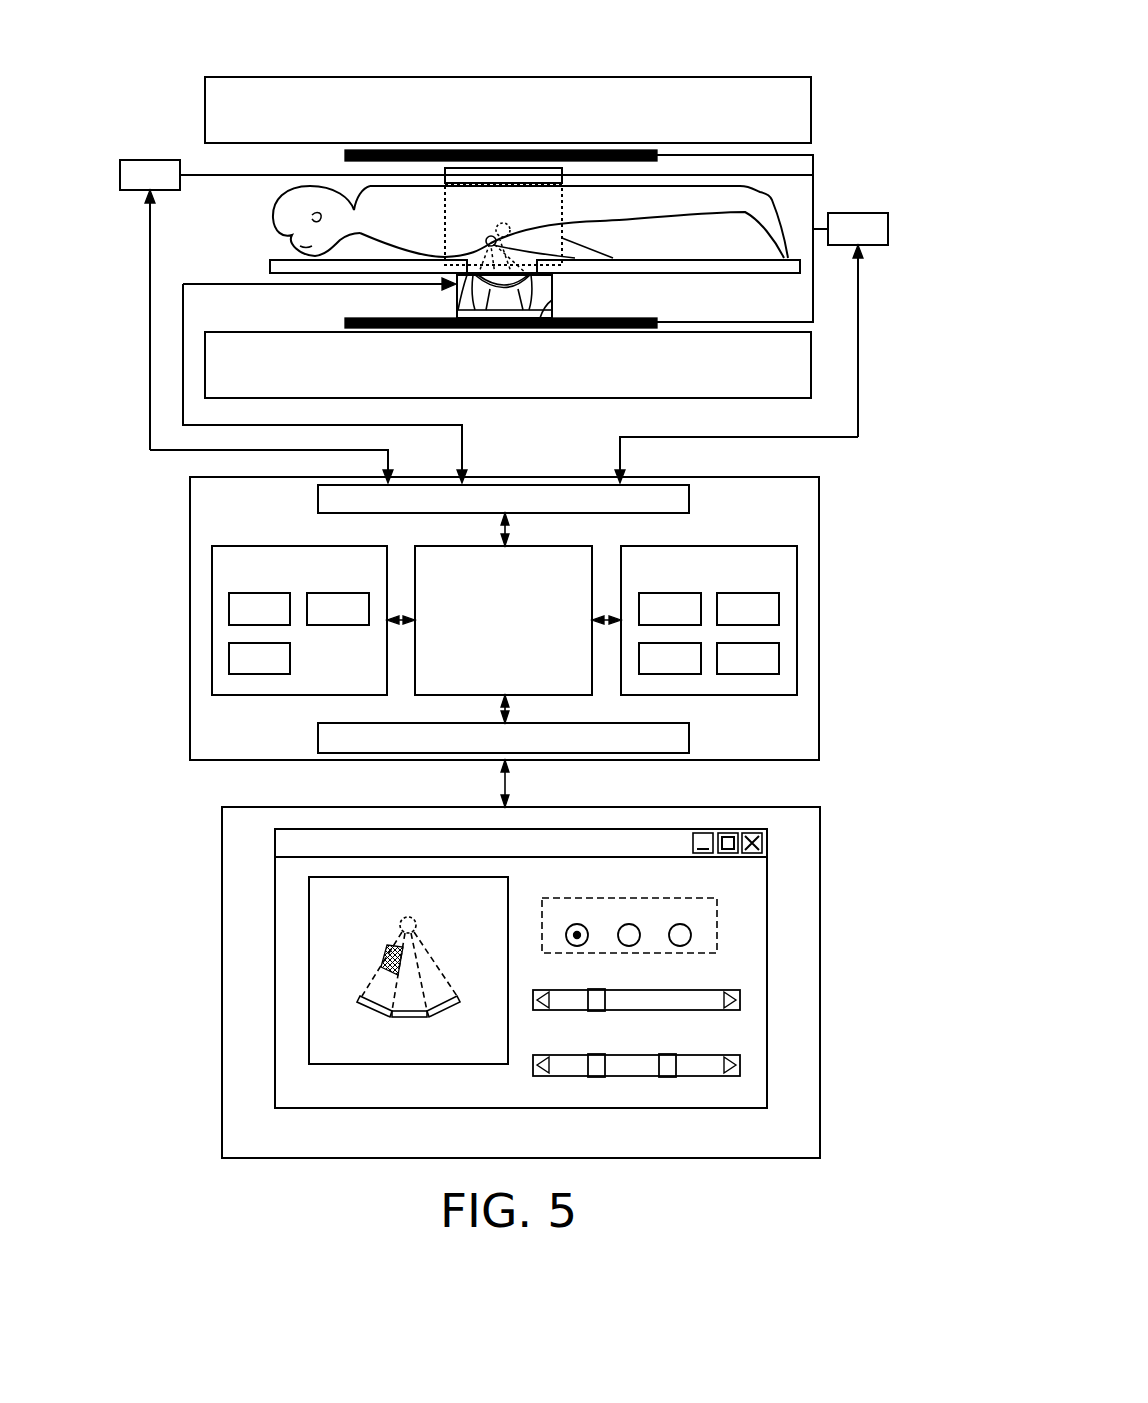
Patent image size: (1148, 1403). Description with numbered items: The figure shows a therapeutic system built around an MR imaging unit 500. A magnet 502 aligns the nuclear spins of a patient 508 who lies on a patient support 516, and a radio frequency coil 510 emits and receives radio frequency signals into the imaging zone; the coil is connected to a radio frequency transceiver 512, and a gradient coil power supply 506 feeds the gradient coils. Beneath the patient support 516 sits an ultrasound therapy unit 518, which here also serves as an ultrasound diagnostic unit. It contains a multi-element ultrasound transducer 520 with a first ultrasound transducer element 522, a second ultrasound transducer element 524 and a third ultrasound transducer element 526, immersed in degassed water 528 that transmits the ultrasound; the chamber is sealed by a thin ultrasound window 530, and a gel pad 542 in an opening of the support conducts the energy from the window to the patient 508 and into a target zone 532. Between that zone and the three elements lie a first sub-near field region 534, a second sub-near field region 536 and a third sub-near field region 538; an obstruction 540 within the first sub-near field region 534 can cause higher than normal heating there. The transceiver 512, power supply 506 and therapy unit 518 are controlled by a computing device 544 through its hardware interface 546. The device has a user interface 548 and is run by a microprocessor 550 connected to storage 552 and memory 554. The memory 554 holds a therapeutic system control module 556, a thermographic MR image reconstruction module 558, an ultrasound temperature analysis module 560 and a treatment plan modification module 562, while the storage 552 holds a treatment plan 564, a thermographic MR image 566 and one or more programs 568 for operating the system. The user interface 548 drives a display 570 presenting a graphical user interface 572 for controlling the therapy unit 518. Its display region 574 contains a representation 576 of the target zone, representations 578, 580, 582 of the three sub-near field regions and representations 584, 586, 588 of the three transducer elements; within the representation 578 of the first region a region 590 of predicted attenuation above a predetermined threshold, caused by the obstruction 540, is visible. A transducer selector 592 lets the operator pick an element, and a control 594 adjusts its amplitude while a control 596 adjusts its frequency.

The MR imaging unit 500 is at (824, 73).
The magnet 502 is at (205, 106).
The gradient coil power supply 506 is at (345, 157).
The patient 508 is at (275, 215).
The radio frequency coil 510 is at (562, 175).
The radio frequency transceiver 512 is at (466, 321).
The patient support 516 is at (270, 266).
The ultrasound therapy unit 518 is at (578, 293).
The multi-element ultrasound transducer 520 is at (548, 325).
The first ultrasound transducer element 522 is at (468, 323).
The second ultrasound transducer element 524 is at (502, 330).
The third ultrasound transducer element 526 is at (538, 323).
The degassed water 528 is at (457, 300).
The ultrasound window 530 is at (447, 333).
The target zone 532 is at (486, 236).
The first sub-near field region 534 is at (562, 238).
The second sub-near field region 536 is at (548, 228).
The third sub-near field region 538 is at (507, 236).
The obstruction 540 is at (485, 240).
The gel pad 542 is at (648, 259).
The computing device 544 is at (819, 527).
The hardware interface 546 is at (689, 498).
The user interface 548 is at (689, 738).
The microprocessor 550 is at (486, 630).
The storage 552 is at (212, 620).
The memory 554 is at (797, 620).
The therapeutic system control module 556 is at (670, 609).
The thermographic MR image reconstruction module 558 is at (748, 609).
The ultrasound temperature analysis module 560 is at (670, 658).
The treatment plan modification module 562 is at (748, 658).
The treatment plan 564 is at (259, 609).
The thermographic MR image 566 is at (338, 609).
The one or more programs for operating therapeutic system 568 is at (259, 658).
The display 570 is at (820, 860).
The graphical user interface 572 is at (275, 862).
The display region 574 is at (309, 903).
The representation of target zone 576 is at (400, 924).
The representation of first sub-near field region 578 is at (380, 978).
The representation of second sub-near field region 580 is at (410, 958).
The representation of third sub-near field region 582 is at (440, 978).
The representation of first ultrasound transducer element 584 is at (362, 1004).
The representation of second ultrasound transducer element 586 is at (397, 1018).
The representation of third ultrasound transducer element 588 is at (455, 1005).
The region with predicted attenuation above a predetermined threshold 590 is at (387, 950).
The transducer selector 592 is at (717, 917).
The control for transducer element amplitude 594 is at (740, 1000).
The control for transducer element frequency 596 is at (740, 1065).